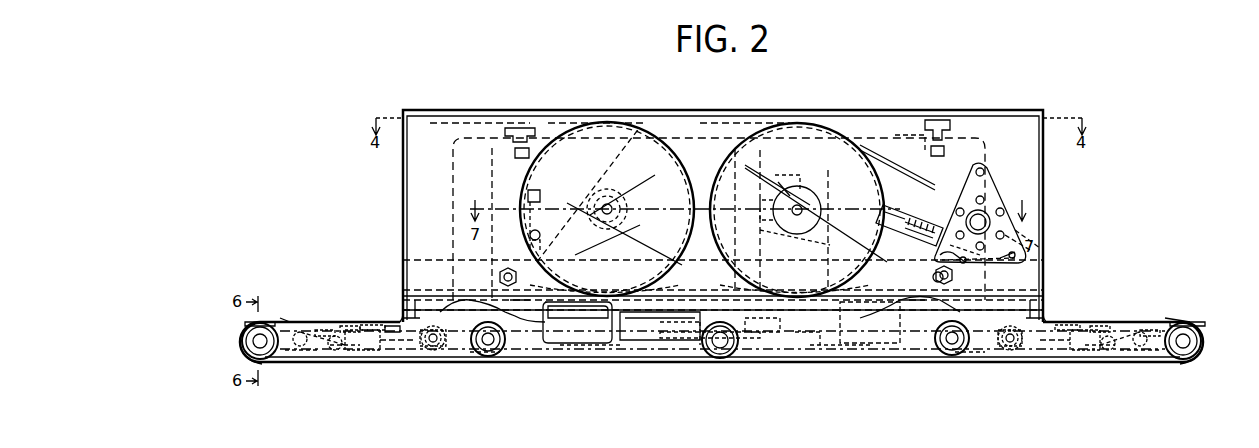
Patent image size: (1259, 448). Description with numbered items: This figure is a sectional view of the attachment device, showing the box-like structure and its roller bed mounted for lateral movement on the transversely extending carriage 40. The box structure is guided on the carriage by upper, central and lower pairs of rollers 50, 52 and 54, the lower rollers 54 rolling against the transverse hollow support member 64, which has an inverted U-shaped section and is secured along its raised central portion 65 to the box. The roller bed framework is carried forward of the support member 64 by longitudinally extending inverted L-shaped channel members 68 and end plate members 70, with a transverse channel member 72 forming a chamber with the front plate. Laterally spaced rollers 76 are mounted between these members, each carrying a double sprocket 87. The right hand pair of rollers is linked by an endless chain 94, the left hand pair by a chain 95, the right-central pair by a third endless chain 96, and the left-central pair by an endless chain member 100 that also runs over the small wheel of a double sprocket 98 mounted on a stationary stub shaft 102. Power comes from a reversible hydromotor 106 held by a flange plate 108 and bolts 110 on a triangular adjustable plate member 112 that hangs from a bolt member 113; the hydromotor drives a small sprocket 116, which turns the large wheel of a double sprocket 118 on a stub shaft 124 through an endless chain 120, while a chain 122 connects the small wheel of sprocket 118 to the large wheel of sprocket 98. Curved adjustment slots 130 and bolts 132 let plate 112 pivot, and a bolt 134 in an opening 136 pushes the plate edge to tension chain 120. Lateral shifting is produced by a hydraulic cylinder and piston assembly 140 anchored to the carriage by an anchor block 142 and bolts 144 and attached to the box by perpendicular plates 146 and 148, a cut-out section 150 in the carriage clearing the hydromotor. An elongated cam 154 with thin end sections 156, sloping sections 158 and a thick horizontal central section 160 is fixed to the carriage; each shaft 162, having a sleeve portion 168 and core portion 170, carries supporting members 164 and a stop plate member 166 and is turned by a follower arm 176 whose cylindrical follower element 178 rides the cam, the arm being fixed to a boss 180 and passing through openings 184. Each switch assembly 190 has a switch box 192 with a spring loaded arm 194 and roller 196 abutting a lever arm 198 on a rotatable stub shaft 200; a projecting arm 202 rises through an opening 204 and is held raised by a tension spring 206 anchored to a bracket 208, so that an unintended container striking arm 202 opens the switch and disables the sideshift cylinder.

The carriage 40 is at (905, 155).
The upper rollers 50 is at (520, 128).
The central rollers 52 is at (930, 277).
The lower rollers 54 is at (915, 345).
The hollow support member 64 is at (1060, 320).
The raised central portion 65 is at (1048, 282).
The inverted L-shaped channel members 68 is at (960, 362).
The plate members 70 is at (1198, 360).
The transverse channel member 72 is at (680, 345).
The rollers 76 is at (1203, 341).
The double sprocket 87 is at (940, 352).
The endless chain 94 is at (1188, 320).
The chain 95 is at (285, 318).
The third endless chain 96 is at (765, 345).
The double sprocket 98 is at (640, 124).
The endless chain member 100 is at (640, 243).
The stationary stub shaft 102 is at (612, 205).
The reversible hydromotor 106 is at (1045, 212).
The flange plate 108 is at (1040, 220).
The bolts 110 is at (1040, 200).
The adjustable plate member 112 is at (990, 178).
The bolt member 113 is at (985, 170).
The sprocket 116 is at (1030, 187).
The double sprocket 118 is at (798, 186).
The endless chain 120 is at (890, 165).
The chain 122 is at (700, 157).
The stub shaft 124 is at (796, 228).
The curved adjustment slots 130 is at (1035, 250).
The bolts 132 is at (1045, 228).
The bolt 134 is at (880, 232).
The opening 136 is at (905, 212).
The hydraulic cylinder and piston assembly 140 is at (663, 212).
The anchor block 142 is at (540, 192).
The bolts 144 is at (542, 200).
The plate 146 is at (810, 196).
The plate 148 is at (815, 178).
The cut-out section 150 is at (883, 140).
The elongated cam 154 is at (645, 345).
The thin elongated sections 156 is at (985, 288).
The sloping sections 158 is at (820, 289).
The horizontal central section 160 is at (665, 345).
The shaft 162 is at (1012, 362).
The supporting members 164 is at (1090, 360).
The stop plate member 166 is at (1170, 318).
The sleeve portion 168 is at (1020, 355).
The core portion 170 is at (985, 352).
The follower arm 176 is at (868, 345).
The cylindrical follower element 178 is at (830, 345).
The boss 180 is at (1055, 362).
The openings 184 is at (840, 362).
The switch assembly 190 is at (1115, 360).
The switch box 192 is at (386, 322).
The spring loaded arm 194 is at (1095, 322).
The roller 196 is at (1128, 318).
The lever arm 198 is at (1145, 360).
The rotatable stub shaft 200 is at (1165, 360).
The projecting arm 202 is at (1205, 325).
The opening 204 is at (245, 322).
The tension spring 206 is at (1150, 318).
The bracket 208 is at (1078, 322).